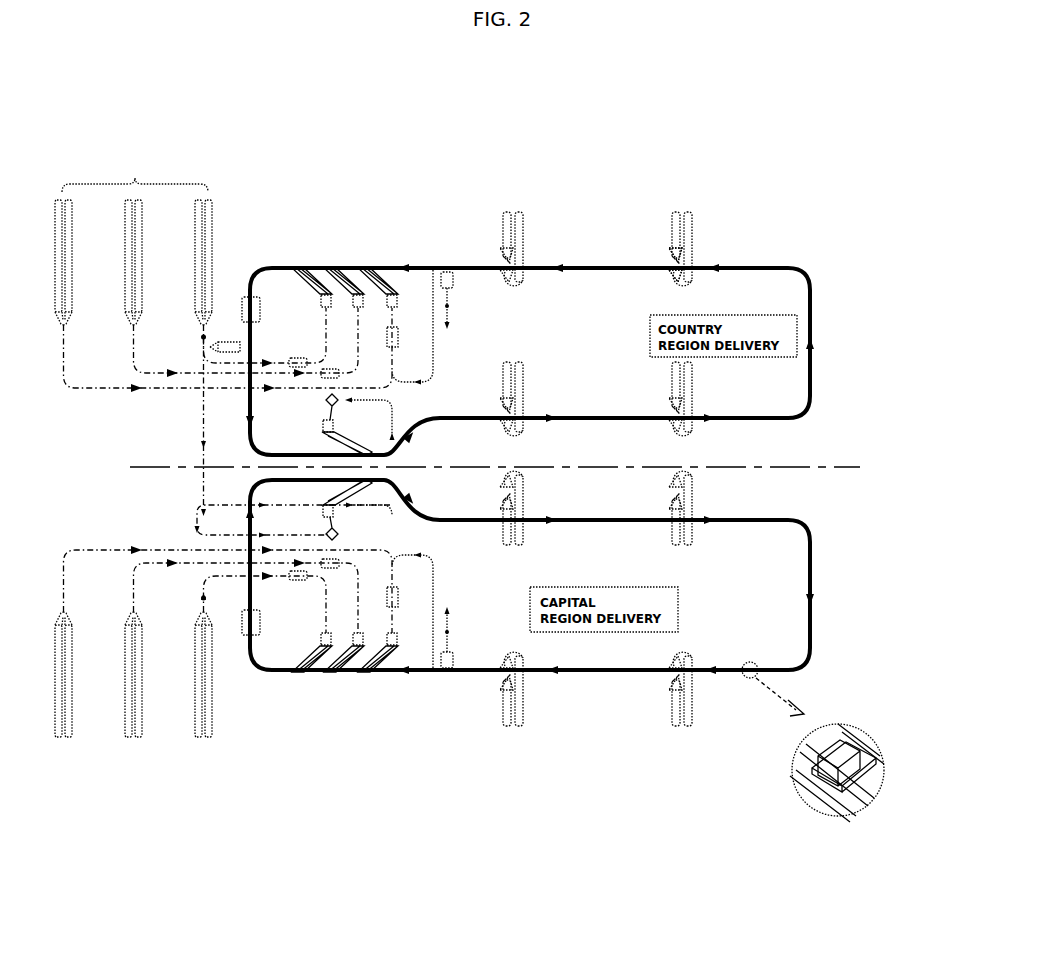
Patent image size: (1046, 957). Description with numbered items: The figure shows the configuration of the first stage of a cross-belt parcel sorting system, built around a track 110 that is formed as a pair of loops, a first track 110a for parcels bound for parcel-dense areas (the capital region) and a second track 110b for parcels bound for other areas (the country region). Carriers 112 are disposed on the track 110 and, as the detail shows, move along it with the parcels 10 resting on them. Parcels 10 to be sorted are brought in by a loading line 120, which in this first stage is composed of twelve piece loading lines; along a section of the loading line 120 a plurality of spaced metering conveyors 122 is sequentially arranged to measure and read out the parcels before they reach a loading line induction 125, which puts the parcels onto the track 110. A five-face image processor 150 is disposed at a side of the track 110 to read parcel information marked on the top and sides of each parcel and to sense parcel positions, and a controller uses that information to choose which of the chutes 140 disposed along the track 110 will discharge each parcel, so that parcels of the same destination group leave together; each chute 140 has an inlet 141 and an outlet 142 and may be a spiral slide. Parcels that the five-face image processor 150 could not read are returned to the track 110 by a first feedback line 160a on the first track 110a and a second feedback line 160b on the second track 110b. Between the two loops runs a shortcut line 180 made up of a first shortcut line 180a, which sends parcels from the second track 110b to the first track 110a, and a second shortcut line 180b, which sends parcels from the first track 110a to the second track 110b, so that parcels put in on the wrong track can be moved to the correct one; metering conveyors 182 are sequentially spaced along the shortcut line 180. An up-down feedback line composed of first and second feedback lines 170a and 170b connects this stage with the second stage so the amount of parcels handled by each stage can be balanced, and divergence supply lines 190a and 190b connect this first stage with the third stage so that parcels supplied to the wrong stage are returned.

The parcel 10 is at (862, 748).
The track 110 is at (596, 550).
The first track 110a is at (570, 577).
The second track 110b is at (812, 357).
The carrier 112 is at (812, 766).
The loading line 120 is at (222, 208).
The metering conveyor 122 is at (350, 266).
The loading line induction 125 is at (328, 266).
The chute 140 is at (712, 226).
The inlet 141 is at (672, 288).
The outlet 142 is at (672, 228).
The 5-face image processor 150 is at (262, 305).
The first feedback line 160a is at (417, 560).
The second feedback line 160b is at (436, 364).
The first feedback line of up-down feedback line 170a is at (458, 628).
The second feedback line of up-down feedback line 170b is at (458, 312).
The shortcut line 180 is at (461, 437).
The first shortcut line 180a is at (205, 410).
The second shortcut line 180b is at (254, 520).
The metering conveyor 182 is at (326, 400).
The small-size/medium and large-size divergence supply line 190a is at (206, 598).
The small-size/medium and large-size divergence supply line 190b is at (206, 336).